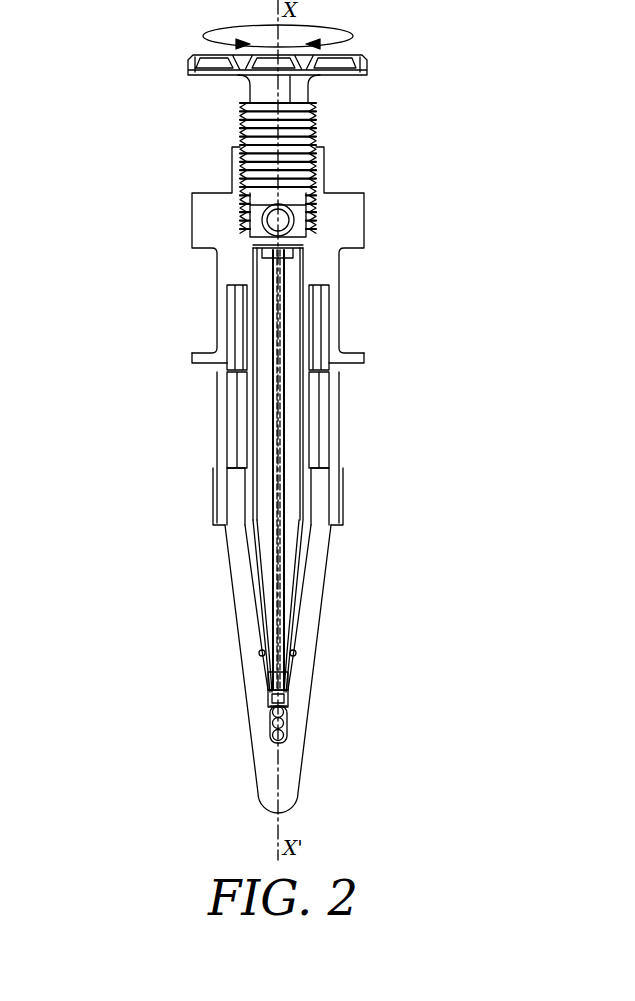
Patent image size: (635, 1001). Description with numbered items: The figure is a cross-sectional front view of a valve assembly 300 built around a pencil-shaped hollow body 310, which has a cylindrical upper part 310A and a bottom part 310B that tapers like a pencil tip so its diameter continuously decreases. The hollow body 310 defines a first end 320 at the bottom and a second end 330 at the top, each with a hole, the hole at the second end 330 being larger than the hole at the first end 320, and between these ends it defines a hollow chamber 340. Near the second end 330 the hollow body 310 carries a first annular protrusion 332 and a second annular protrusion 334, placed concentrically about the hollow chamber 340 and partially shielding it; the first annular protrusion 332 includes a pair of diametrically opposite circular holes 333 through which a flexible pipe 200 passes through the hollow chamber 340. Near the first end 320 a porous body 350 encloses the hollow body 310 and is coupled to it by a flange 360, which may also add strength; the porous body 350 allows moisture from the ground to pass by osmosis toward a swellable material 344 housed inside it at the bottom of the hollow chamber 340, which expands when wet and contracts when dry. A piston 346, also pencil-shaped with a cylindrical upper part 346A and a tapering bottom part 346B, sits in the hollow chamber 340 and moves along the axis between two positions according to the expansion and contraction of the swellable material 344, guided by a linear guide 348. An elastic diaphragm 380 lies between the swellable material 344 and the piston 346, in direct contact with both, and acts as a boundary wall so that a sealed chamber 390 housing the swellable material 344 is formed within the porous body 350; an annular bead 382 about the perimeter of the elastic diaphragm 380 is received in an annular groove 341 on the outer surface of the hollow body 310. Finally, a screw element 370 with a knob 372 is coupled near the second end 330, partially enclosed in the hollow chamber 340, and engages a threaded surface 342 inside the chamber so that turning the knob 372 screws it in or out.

The valve assembly 300 is at (517, 98).
The knob 372 is at (190, 62).
The screw element 370 is at (246, 88).
The second end 330 is at (240, 147).
The threaded surface 342 is at (319, 157).
The first annular protrusion 332 is at (192, 222).
The second annular protrusion 334 is at (193, 358).
The diametrically opposite circular holes 333 is at (306, 228).
The flexible pipe 200 is at (295, 207).
The hollow body 310 is at (314, 397).
The upper part 310A is at (243, 333).
The bottom part 310B is at (312, 553).
The flange 360 is at (330, 378).
The hollow chamber 340 is at (307, 432).
The annular groove 341 is at (256, 645).
The piston 346 is at (271, 430).
The upper part 346A is at (276, 405).
The bottom part 346B is at (268, 700).
The linear guide 348 is at (268, 675).
The swellable material 344 is at (270, 736).
The porous body 350 is at (313, 605).
The annular bead 382 is at (296, 653).
The elastic diaphragm 380 is at (297, 662).
The first end 320 is at (292, 680).
The chamber 390 is at (289, 708).